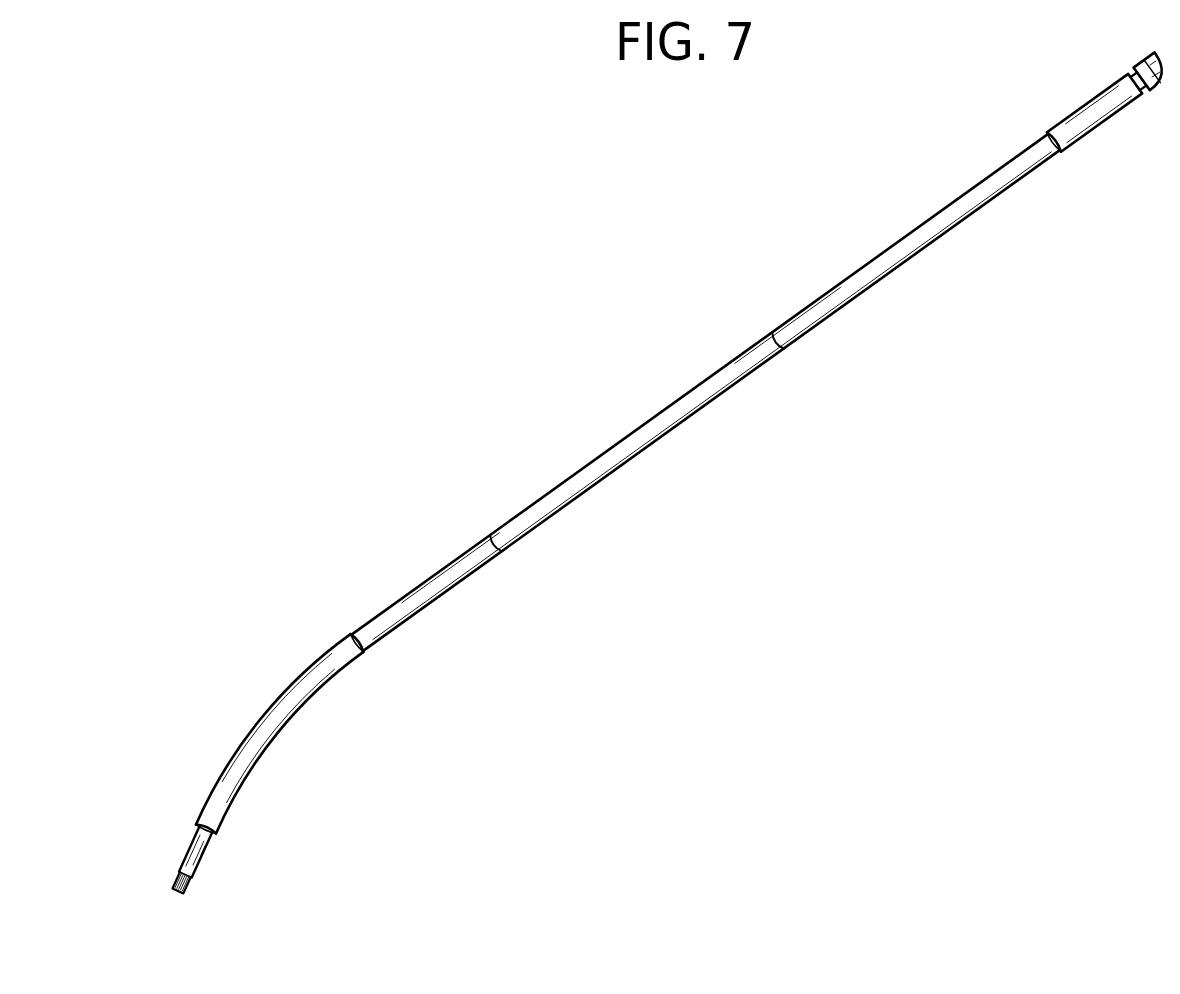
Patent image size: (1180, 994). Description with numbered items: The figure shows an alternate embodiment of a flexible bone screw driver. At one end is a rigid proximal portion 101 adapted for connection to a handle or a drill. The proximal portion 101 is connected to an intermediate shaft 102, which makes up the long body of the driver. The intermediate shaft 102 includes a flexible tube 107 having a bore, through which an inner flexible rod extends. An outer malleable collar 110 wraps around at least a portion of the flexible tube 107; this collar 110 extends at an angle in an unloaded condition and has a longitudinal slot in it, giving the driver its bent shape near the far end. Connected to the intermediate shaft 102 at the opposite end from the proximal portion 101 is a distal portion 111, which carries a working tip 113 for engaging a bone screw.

The rigid proximal portion 101 is at (1017, 177).
The intermediate shaft 102 is at (414, 530).
The flexible tube 107 is at (495, 553).
The outer malleable collar 110 is at (292, 728).
The distal portion 111 is at (203, 867).
The working tip 113 is at (188, 887).